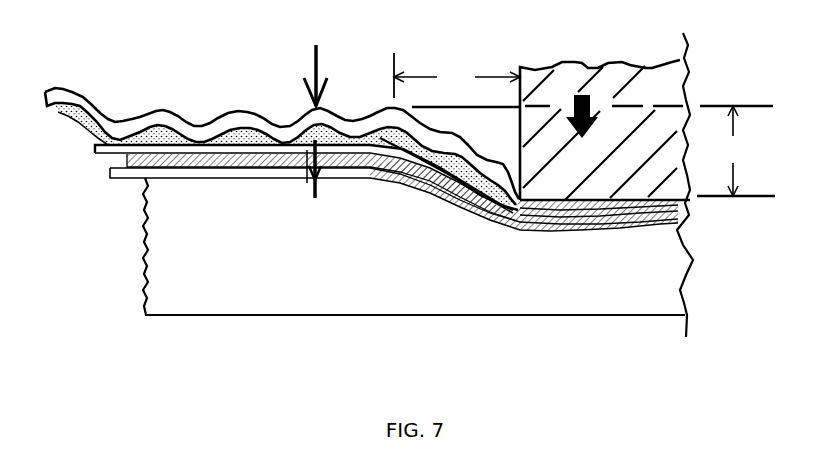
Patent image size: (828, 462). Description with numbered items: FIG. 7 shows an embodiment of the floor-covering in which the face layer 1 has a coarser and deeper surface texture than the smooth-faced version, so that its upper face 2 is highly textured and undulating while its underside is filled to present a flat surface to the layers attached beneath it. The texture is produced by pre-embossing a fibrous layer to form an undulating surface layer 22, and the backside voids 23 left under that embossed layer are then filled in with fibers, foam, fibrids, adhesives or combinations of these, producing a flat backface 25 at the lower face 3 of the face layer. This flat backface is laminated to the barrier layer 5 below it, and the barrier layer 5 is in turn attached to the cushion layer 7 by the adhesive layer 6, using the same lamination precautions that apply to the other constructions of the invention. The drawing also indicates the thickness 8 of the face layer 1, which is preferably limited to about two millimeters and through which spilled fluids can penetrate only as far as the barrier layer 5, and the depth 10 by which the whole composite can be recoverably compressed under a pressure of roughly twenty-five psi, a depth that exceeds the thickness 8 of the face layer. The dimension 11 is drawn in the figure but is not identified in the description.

The face layer 1 is at (162, 125).
The undulating surface layer 22 is at (228, 127).
The backside voids 23 is at (80, 118).
The lower face 3 is at (230, 147).
The barrier layer 5 is at (252, 153).
The adhesive layer 6 is at (269, 163).
The upper face 2 is at (298, 143).
The flat backface 25 is at (388, 150).
The thickness of face layer 8 is at (315, 64).
The distance 11 is at (457, 75).
The depth 10 is at (736, 151).
The cushion layer 7 is at (200, 288).